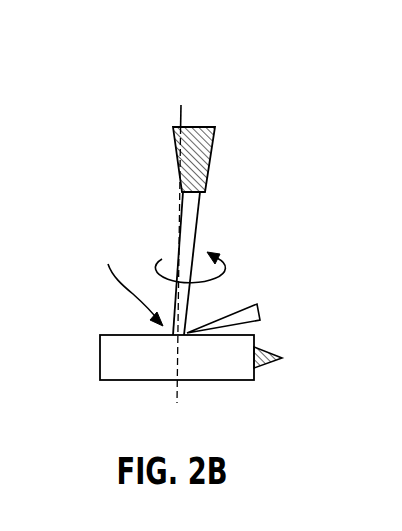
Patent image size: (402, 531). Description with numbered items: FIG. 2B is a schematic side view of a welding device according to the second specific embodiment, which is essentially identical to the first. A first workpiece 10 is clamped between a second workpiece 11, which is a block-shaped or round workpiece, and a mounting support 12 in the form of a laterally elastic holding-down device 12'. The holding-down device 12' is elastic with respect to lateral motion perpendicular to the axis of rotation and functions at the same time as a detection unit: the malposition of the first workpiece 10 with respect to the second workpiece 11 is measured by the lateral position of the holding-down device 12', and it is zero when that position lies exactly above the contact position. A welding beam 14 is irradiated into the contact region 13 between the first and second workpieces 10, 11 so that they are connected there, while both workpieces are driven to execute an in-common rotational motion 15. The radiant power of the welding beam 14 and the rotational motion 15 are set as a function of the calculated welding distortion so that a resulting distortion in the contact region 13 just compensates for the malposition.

The first workpiece 10 is at (200, 216).
The second workpiece 11 is at (121, 360).
The mounting support 12 is at (291, 398).
The laterally elastic holding-down device 12' is at (205, 110).
The contact region 13 is at (130, 283).
The welding beam 14 is at (245, 303).
The rotational motion 15 is at (225, 271).